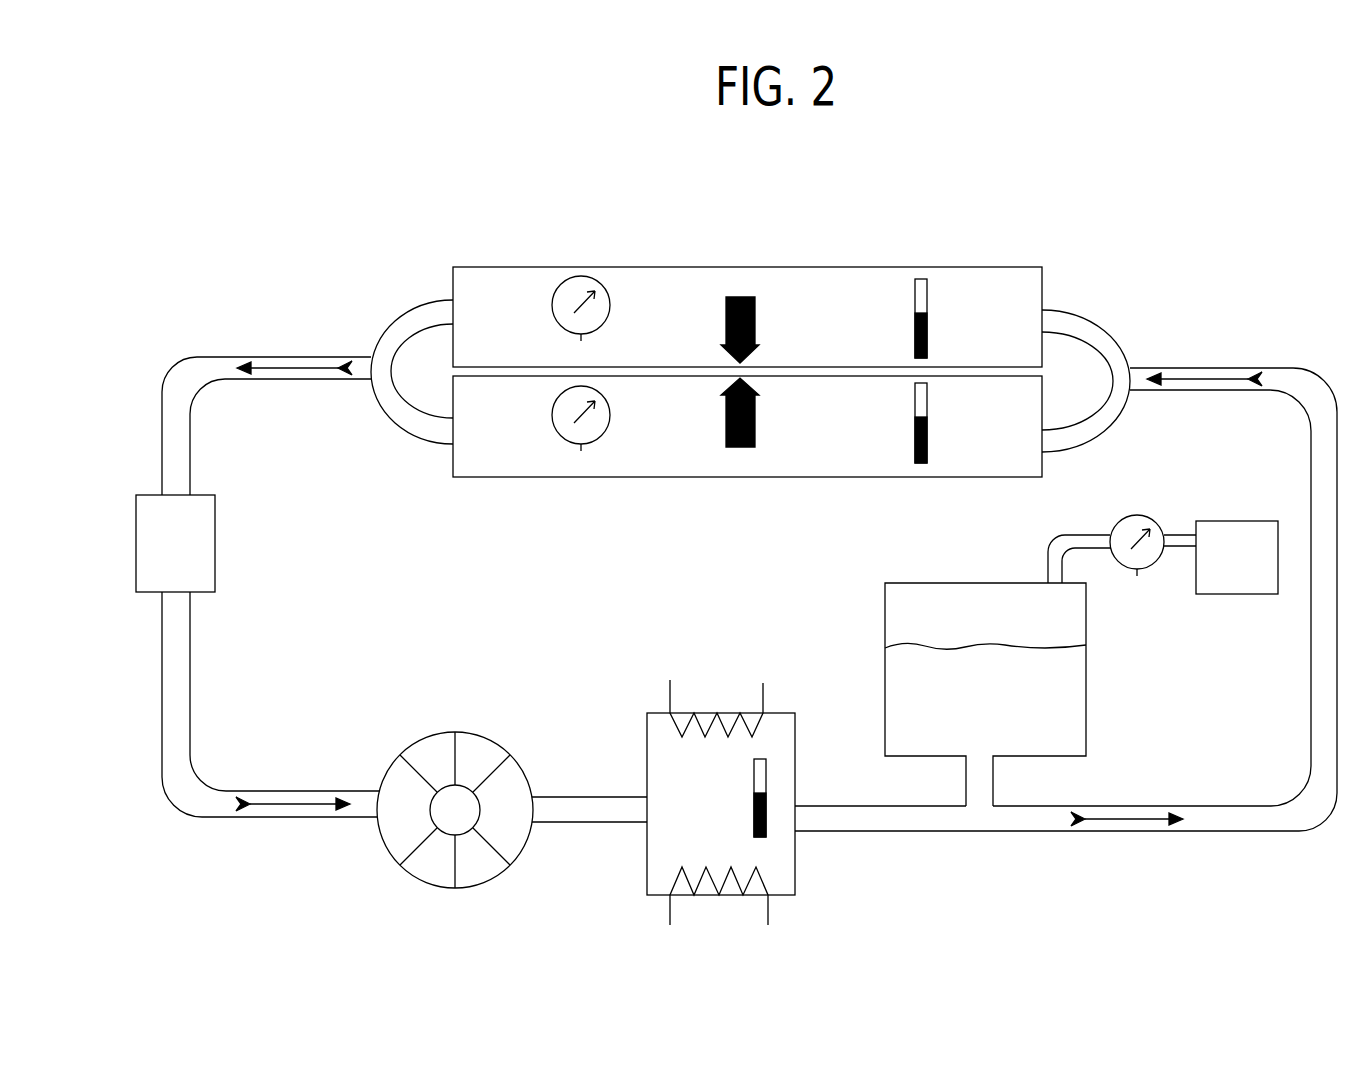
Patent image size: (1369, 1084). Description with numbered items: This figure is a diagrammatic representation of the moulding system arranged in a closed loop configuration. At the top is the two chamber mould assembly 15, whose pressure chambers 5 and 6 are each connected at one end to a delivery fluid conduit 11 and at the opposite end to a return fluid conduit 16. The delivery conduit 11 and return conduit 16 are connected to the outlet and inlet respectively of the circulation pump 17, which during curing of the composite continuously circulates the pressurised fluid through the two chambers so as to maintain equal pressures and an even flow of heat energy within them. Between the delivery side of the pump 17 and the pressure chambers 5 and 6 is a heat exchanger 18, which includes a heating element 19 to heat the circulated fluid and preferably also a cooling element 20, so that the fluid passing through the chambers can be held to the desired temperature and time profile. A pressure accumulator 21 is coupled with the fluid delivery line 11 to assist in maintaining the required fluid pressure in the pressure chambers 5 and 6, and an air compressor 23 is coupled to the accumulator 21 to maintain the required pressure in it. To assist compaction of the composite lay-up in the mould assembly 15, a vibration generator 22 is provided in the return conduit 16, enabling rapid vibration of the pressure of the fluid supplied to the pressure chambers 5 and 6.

The pressure chamber 5 is at (668, 252).
The pressure chamber 6 is at (674, 484).
The delivery fluid conduit 11 is at (1291, 426).
The two chamber mould assembly 15 is at (1066, 234).
The return fluid conduit 16 is at (204, 418).
The circulation pump 17 is at (385, 877).
The heat exchanger 18 is at (651, 792).
The heating element 19 is at (717, 699).
The cooling element 20 is at (730, 894).
The pressure accumulator 21 is at (873, 586).
The vibration generator 22 is at (232, 540).
The air compressor 23 is at (1260, 609).